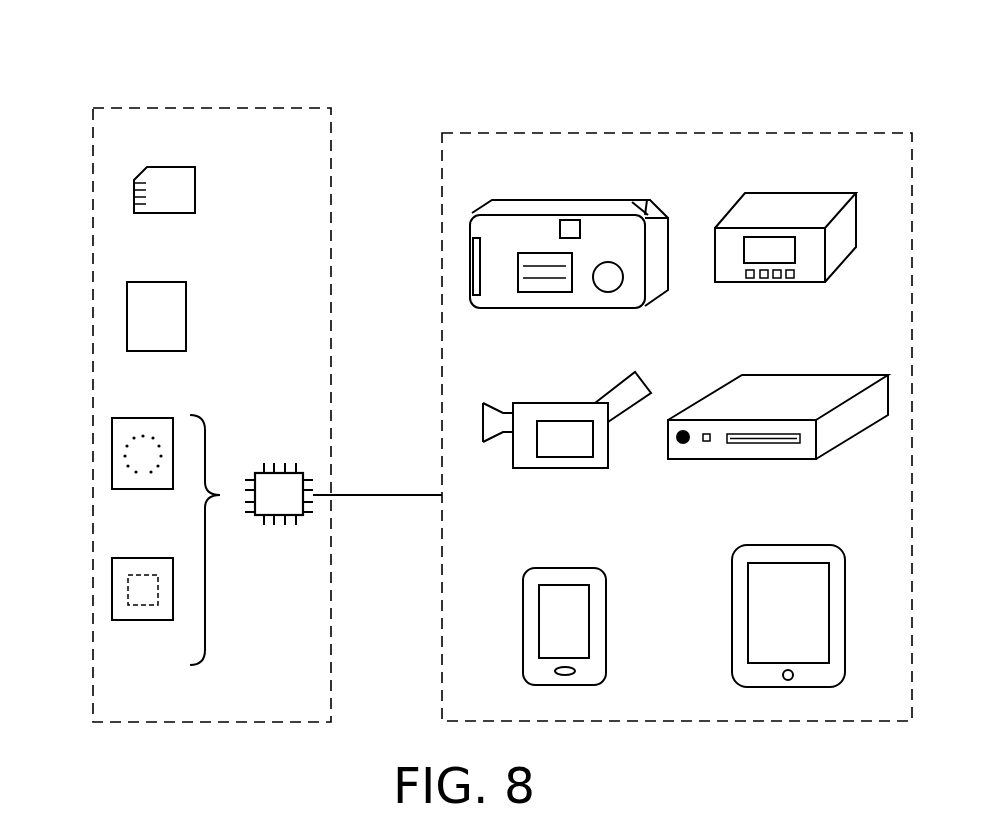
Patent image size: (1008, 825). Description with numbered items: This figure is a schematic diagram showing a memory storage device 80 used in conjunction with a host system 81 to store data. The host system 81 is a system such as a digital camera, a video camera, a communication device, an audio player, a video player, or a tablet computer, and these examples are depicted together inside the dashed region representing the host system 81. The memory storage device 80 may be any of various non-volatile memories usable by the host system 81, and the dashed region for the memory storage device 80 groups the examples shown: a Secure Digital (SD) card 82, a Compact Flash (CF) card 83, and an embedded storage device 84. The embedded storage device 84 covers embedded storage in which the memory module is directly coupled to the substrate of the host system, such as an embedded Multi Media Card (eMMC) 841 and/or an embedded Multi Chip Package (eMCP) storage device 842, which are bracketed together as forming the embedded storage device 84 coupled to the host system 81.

The memory storage device 80 is at (201, 107).
The host system 81 is at (603, 131).
The Secure Digital (SD) card 82 is at (134, 196).
The Compact Flash (CF) card 83 is at (127, 318).
The embedded storage device 84 is at (280, 463).
The embedded Multi Media Card (eMMC) 841 is at (112, 455).
The embedded Multi Chip Package (eMCP) storage device 842 is at (112, 590).